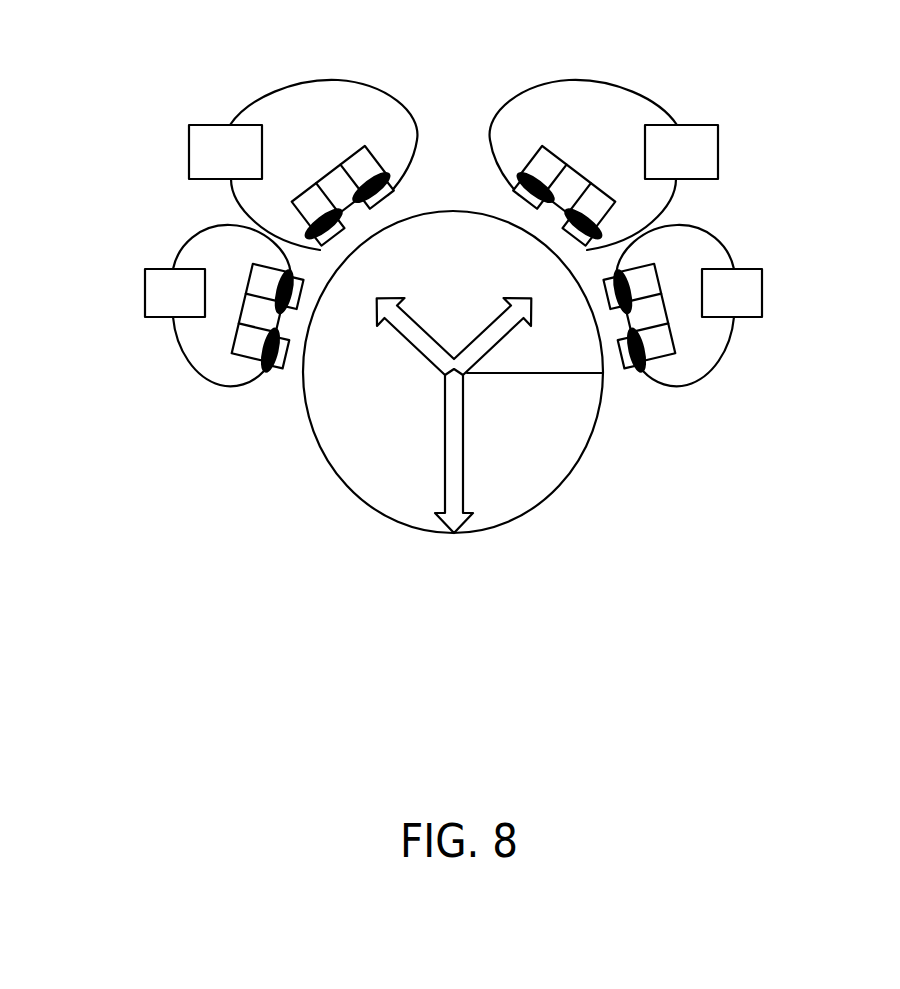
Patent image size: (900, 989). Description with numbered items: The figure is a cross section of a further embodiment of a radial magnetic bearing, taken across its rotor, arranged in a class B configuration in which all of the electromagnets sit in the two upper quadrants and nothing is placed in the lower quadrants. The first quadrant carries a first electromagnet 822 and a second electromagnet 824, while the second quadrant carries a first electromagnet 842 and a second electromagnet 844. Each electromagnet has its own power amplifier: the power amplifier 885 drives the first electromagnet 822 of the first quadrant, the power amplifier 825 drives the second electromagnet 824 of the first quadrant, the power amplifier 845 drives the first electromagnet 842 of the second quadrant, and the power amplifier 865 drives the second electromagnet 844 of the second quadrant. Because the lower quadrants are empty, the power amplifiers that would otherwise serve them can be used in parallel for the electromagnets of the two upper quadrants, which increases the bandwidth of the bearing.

The first electromagnet of the first quadrant 822 is at (233, 356).
The second electromagnet of the first quadrant 824 is at (346, 158).
The power amplifier for the second electromagnet of the first quadrant 825 is at (210, 125).
The first electromagnet of the second quadrant 842 is at (583, 138).
The second electromagnet of the second quadrant 844 is at (662, 359).
The power amplifier for the first electromagnet of the second quadrant 845 is at (698, 116).
The power amplifier for the second electromagnet of the second quadrant 865 is at (788, 279).
The power amplifier for the first electromagnet of the first quadrant 885 is at (145, 292).